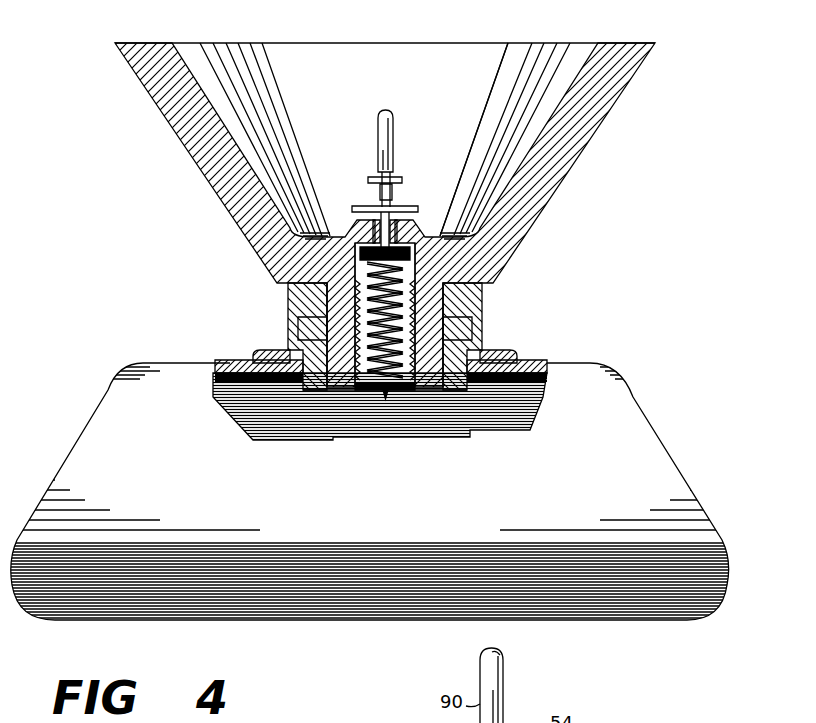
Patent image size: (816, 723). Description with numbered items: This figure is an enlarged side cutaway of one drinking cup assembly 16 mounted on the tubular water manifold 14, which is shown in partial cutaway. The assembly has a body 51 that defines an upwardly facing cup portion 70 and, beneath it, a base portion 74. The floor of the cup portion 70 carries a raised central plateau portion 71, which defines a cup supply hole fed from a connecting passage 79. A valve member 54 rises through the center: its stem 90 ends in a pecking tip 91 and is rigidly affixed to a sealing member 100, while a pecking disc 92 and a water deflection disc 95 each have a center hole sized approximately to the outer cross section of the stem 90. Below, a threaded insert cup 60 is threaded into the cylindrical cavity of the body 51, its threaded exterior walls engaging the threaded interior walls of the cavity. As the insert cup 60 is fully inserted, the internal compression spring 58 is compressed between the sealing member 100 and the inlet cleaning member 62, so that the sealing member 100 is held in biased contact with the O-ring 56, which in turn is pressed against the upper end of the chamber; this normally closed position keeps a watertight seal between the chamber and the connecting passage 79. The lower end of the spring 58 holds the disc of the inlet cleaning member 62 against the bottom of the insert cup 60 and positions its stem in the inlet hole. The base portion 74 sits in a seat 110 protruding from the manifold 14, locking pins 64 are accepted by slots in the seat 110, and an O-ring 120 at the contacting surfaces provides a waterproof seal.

The water manifold 14 is at (608, 367).
The drinking cup assembly 16 is at (134, 190).
The body 51 is at (585, 156).
The valve member 54 is at (396, 128).
The O-ring 56 is at (416, 260).
The internal compression spring 58 is at (399, 315).
The threaded insert cup 60 is at (320, 336).
The inlet cleaning member 62 is at (386, 400).
The locking pins 64 is at (298, 322).
The cup portion 70 is at (322, 46).
The raised central plateau portion 71 is at (428, 225).
The base portion 74 is at (472, 305).
The connecting passage 79 is at (408, 212).
The stem 90 is at (393, 162).
The pecking tip 91 is at (503, 662).
The pecking disc 92 is at (372, 177).
The water deflection disc 95 is at (358, 206).
The sealing member 100 is at (358, 258).
The seat 110 is at (500, 352).
The O-ring 120 is at (407, 320).